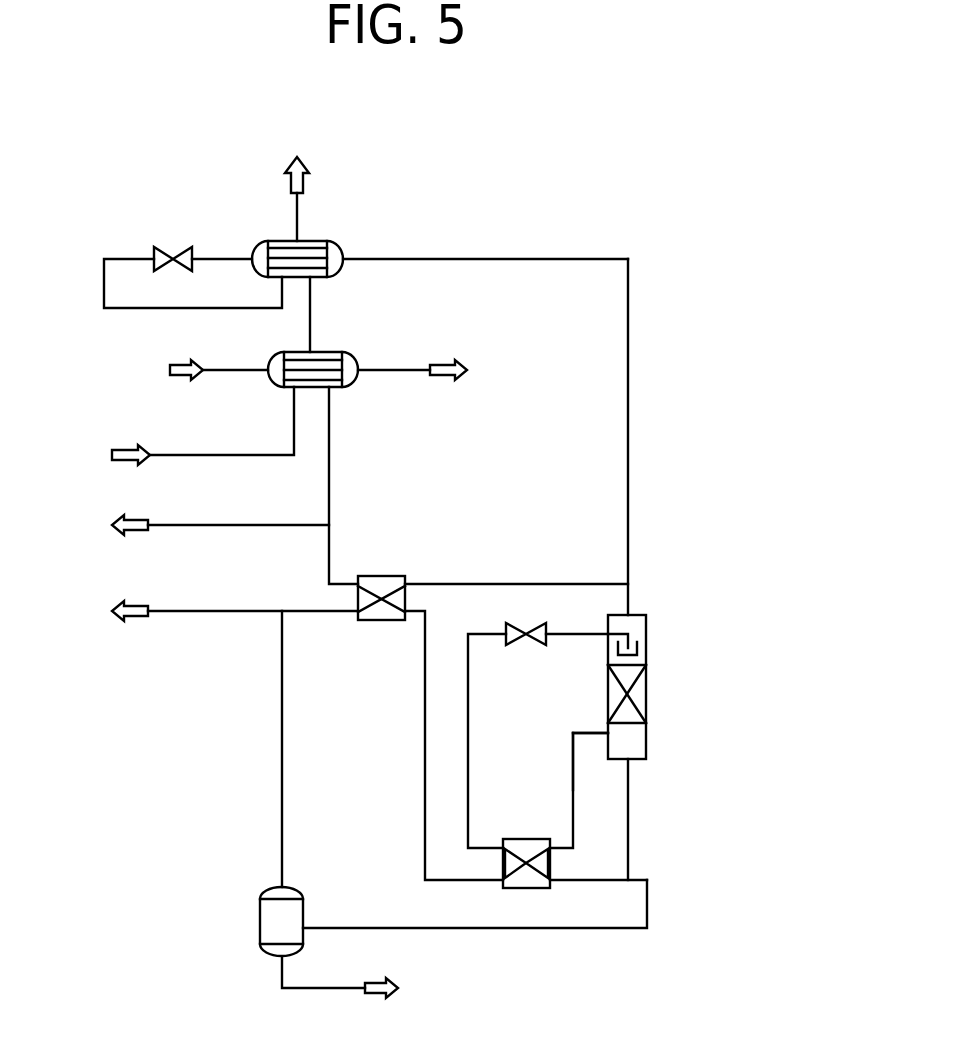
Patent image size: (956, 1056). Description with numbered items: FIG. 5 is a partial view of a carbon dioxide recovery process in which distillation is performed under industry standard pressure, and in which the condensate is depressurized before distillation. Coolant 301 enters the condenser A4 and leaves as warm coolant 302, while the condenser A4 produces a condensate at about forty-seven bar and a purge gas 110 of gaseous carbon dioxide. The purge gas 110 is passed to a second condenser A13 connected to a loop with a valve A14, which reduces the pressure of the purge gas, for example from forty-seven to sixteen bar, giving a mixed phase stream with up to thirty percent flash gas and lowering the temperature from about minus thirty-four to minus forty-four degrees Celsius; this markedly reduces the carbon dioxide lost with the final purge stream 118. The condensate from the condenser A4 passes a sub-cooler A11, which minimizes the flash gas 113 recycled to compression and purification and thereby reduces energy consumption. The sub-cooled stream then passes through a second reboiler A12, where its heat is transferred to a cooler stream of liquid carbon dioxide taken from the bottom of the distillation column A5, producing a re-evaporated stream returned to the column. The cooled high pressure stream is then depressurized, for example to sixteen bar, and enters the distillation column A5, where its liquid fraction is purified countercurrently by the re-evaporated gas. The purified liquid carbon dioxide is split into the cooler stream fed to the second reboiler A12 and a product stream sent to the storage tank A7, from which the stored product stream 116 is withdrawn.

The final purge stream 118 is at (295, 180).
The second condenser A13 is at (346, 239).
The valve A14 is at (167, 239).
The purge gas 110 is at (336, 314).
The condenser A4 is at (267, 391).
The coolant 301 is at (219, 353).
The warm coolant 302 is at (412, 353).
The sub-cooler A11 is at (439, 571).
The flash gas 113 is at (212, 742).
The distillation unit A5 is at (656, 687).
The second reboiler A12 is at (527, 898).
The storage tank A7 is at (244, 933).
The stored product stream 116 is at (364, 980).